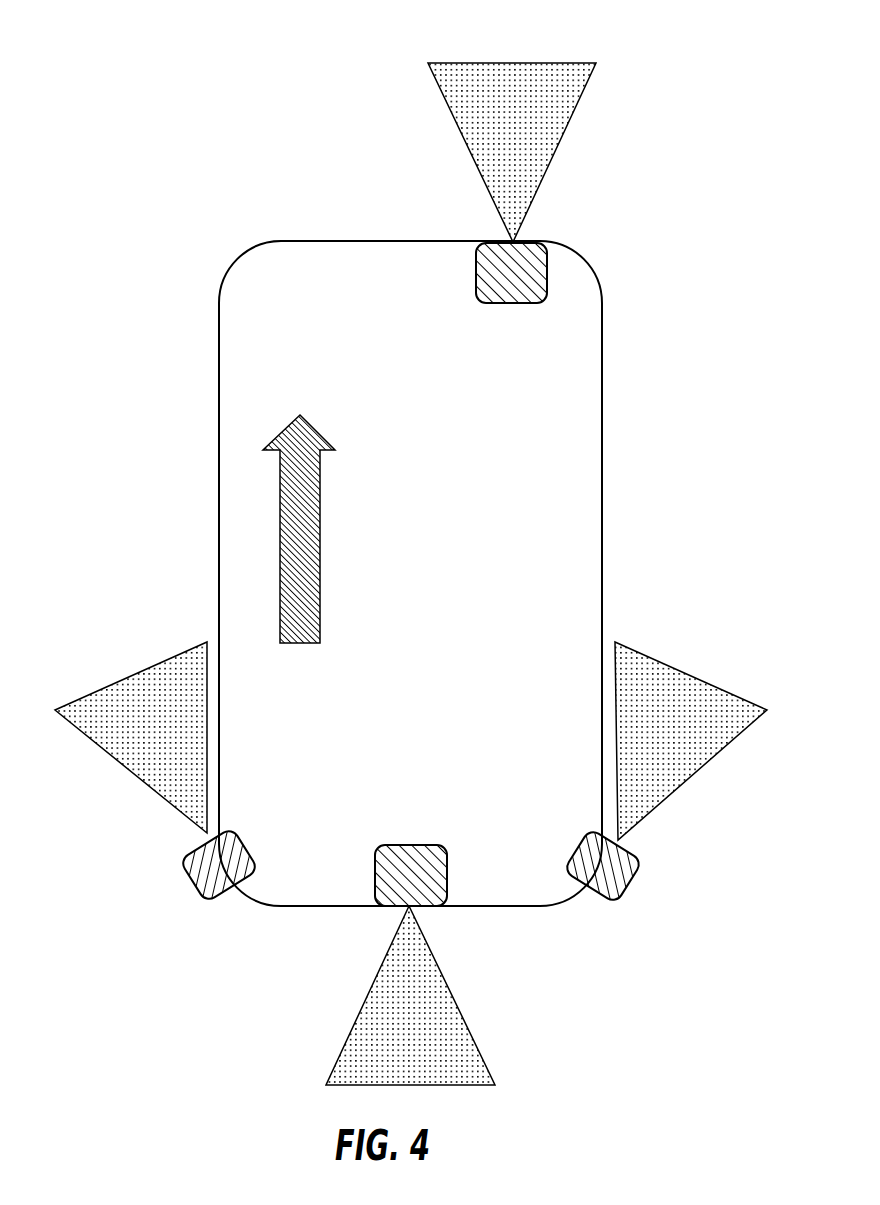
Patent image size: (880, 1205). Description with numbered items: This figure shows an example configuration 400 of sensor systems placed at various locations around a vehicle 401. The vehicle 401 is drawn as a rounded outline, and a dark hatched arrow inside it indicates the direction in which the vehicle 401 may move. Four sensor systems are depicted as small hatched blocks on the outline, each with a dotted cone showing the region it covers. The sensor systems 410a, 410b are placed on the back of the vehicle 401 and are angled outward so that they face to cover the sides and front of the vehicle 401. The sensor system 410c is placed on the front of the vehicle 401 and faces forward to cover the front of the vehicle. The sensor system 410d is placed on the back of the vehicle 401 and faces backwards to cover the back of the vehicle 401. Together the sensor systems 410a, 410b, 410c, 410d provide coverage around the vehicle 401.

The example configuration 400 is at (467, 555).
The vehicle 401 is at (300, 294).
The sensor system 410a is at (176, 880).
The sensor system 410b is at (650, 880).
The sensor system 410c is at (466, 272).
The sensor system 410d is at (366, 875).